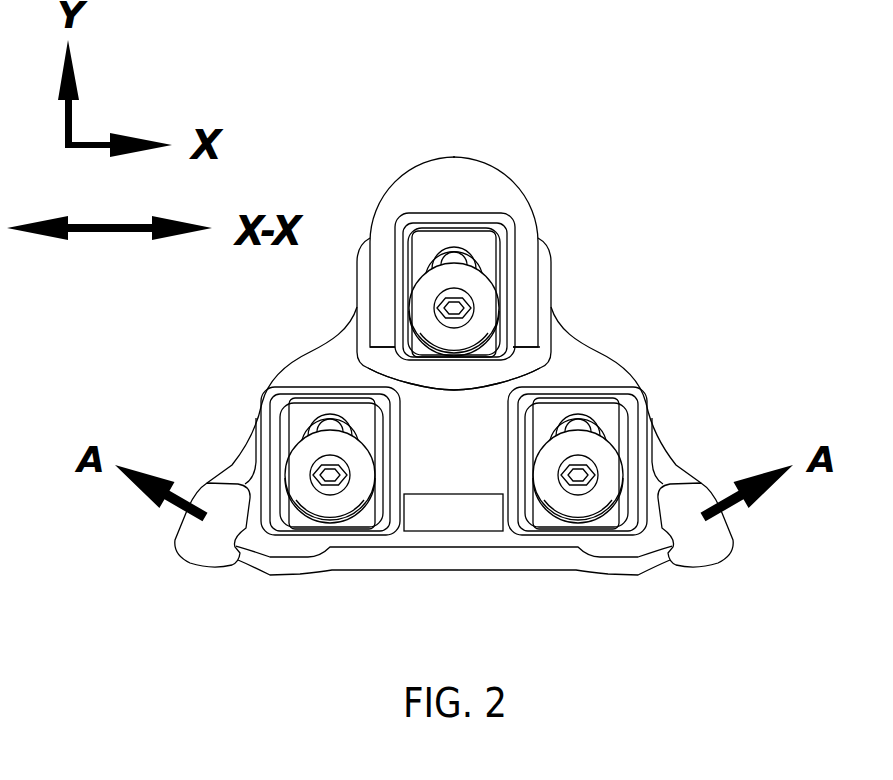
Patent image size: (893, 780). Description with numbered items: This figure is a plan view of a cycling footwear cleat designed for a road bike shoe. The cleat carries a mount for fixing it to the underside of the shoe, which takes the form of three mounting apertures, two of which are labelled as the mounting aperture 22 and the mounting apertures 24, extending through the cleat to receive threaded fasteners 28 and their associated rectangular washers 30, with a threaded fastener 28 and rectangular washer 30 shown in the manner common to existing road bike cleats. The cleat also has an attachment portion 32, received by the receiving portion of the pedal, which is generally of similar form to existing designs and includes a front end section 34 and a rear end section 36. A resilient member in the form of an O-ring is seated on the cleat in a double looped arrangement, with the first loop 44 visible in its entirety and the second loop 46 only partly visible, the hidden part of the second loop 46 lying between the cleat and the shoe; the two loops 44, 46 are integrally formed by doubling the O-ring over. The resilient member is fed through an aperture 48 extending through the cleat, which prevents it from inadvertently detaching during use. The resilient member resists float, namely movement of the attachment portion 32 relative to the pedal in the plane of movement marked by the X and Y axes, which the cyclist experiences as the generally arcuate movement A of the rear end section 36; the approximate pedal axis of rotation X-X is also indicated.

The mounting aperture 22 is at (487, 229).
The mounting aperture 24 is at (327, 428).
The threaded fastener 28 is at (482, 323).
The rectangular washer 30 is at (487, 255).
The attachment portion 32 is at (493, 396).
The front end section 34 is at (457, 188).
The rear end section 36 is at (453, 570).
The first loop 44 is at (584, 314).
The second loop 46 is at (545, 288).
The aperture 48 is at (545, 350).